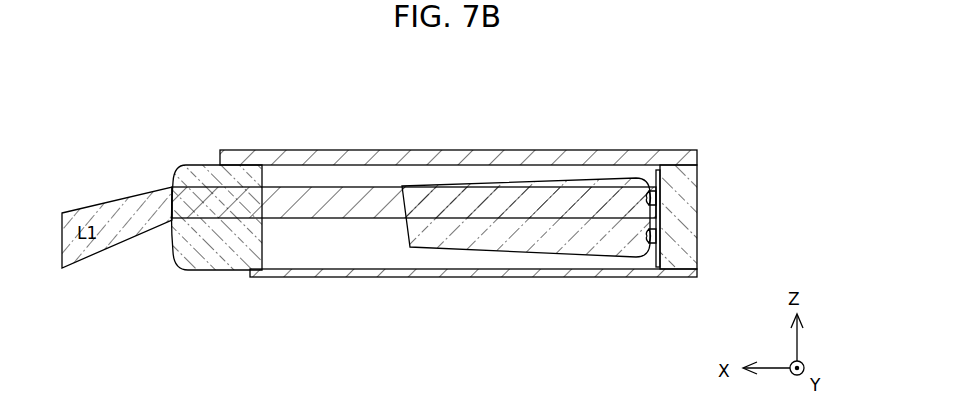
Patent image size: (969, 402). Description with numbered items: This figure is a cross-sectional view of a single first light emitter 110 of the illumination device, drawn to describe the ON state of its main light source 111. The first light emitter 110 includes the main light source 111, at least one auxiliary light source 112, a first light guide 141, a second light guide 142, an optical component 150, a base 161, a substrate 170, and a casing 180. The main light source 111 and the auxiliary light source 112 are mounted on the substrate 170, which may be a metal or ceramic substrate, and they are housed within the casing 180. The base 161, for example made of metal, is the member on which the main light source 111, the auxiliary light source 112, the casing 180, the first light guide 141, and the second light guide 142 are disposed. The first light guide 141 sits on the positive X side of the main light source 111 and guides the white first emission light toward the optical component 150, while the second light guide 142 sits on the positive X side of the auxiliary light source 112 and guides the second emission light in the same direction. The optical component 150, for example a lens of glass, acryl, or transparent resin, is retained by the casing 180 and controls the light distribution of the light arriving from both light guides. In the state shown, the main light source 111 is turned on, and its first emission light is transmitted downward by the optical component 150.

The first light emitter 110 is at (724, 120).
The main light source 111 is at (661, 194).
The auxiliary light source 112 is at (661, 234).
The first light guide 141 is at (455, 185).
The second light guide 142 is at (455, 240).
The optical component 150 is at (200, 176).
The base 161 is at (672, 165).
The substrate 170 is at (661, 247).
The casing 180 is at (541, 160).